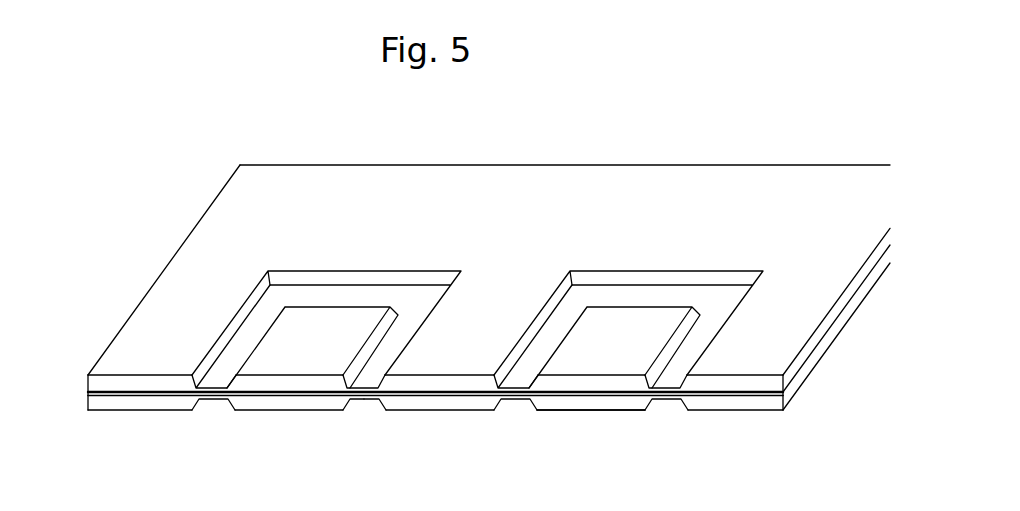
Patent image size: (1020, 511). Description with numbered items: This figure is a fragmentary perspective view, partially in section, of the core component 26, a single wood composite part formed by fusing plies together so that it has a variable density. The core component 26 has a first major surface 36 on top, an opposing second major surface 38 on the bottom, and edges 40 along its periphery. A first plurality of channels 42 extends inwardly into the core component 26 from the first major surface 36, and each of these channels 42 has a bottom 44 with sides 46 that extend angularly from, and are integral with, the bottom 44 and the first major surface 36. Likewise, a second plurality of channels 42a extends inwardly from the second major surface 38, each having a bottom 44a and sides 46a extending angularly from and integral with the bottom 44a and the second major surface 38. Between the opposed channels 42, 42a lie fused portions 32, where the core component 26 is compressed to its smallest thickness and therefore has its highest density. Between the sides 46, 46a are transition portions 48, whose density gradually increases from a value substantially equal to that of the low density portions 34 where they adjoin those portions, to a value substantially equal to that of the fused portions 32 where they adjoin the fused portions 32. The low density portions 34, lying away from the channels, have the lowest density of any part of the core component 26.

The core component 26 is at (729, 117).
The fused portions 32 is at (515, 403).
The low density portions 34 is at (585, 397).
The first major surface 36 is at (224, 247).
The second major surface 38 is at (489, 377).
The edges 40 is at (85, 393).
The first plurality of channels 42 is at (353, 278).
The second plurality of channels 42a is at (214, 404).
The bottom 44 is at (218, 386).
The bottom 44a is at (357, 402).
The sides 46 is at (201, 382).
The sides 46a is at (374, 406).
The transition portions 48 is at (637, 397).